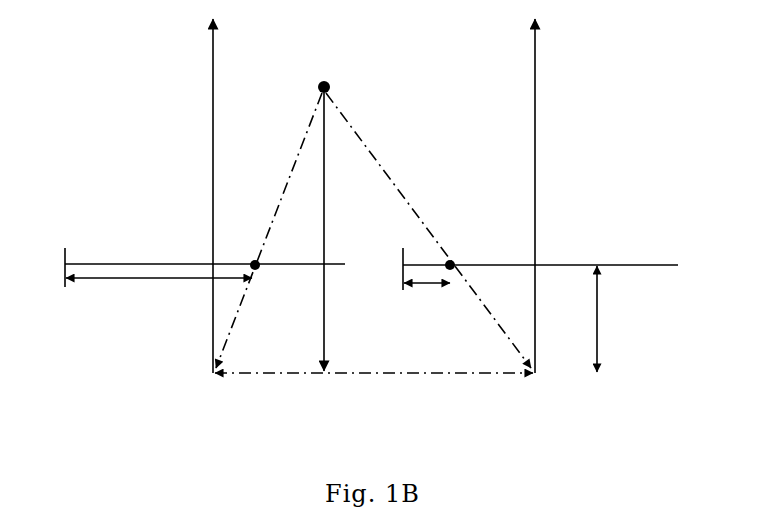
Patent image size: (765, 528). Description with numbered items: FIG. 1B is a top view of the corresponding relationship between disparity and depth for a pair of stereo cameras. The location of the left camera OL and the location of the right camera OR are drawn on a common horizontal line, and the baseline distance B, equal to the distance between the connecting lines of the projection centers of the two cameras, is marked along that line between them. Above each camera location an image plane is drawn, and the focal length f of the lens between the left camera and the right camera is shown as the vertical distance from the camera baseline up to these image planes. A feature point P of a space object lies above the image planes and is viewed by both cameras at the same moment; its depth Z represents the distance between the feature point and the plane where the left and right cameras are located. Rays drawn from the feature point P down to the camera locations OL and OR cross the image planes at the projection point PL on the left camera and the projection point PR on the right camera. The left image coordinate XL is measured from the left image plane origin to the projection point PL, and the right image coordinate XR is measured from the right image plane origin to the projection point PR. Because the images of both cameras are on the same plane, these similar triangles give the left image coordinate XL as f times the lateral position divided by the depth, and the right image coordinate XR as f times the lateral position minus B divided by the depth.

The feature point P is at (373, 213).
The projection point on left camera PL is at (248, 255).
The projection point on right camera PR is at (455, 253).
The location of the left camera OL is at (205, 214).
The location of the right camera OR is at (540, 213).
The depth of the feature point Z is at (335, 232).
The left image coordinate XL is at (158, 278).
The right image coordinate XR is at (426, 278).
The focal length f is at (611, 319).
The baseline distance B is at (374, 394).